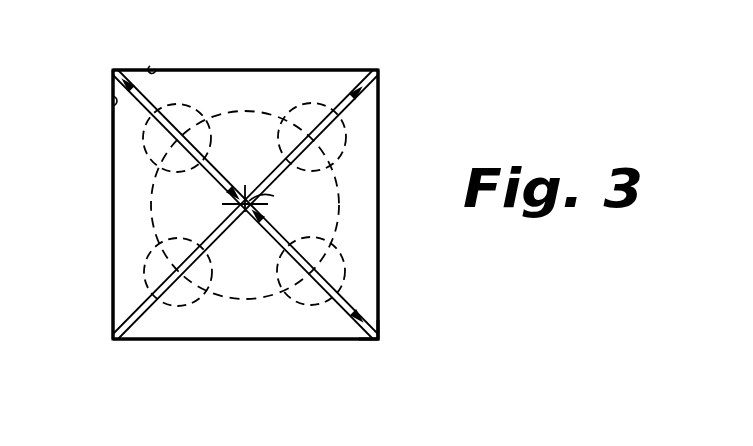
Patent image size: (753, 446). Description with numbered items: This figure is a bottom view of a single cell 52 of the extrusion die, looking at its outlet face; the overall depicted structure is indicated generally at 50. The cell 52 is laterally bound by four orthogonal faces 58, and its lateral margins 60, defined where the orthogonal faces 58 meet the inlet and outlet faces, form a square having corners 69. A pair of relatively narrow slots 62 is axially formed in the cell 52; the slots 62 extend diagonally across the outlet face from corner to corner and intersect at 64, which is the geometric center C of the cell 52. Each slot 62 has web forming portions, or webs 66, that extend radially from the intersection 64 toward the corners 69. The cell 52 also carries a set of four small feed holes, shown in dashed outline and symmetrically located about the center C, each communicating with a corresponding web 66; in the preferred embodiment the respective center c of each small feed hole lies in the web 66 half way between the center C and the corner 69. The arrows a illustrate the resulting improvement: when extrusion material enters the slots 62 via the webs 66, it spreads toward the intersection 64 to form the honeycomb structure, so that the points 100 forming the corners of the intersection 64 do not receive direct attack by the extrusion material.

The panel assembly 50 is at (406, 56).
The cell 52 is at (380, 117).
The orthogonal faces 58 is at (112, 177).
The lateral margins 60 is at (150, 66).
The slots 62 is at (266, 172).
The intersection 64 is at (245, 229).
The webs 66 is at (302, 127).
The corners 69 is at (394, 351).
The points 100 is at (240, 205).
The arrows a is at (158, 91).
The center of small feed hole c is at (330, 242).
The geometric center C is at (276, 203).